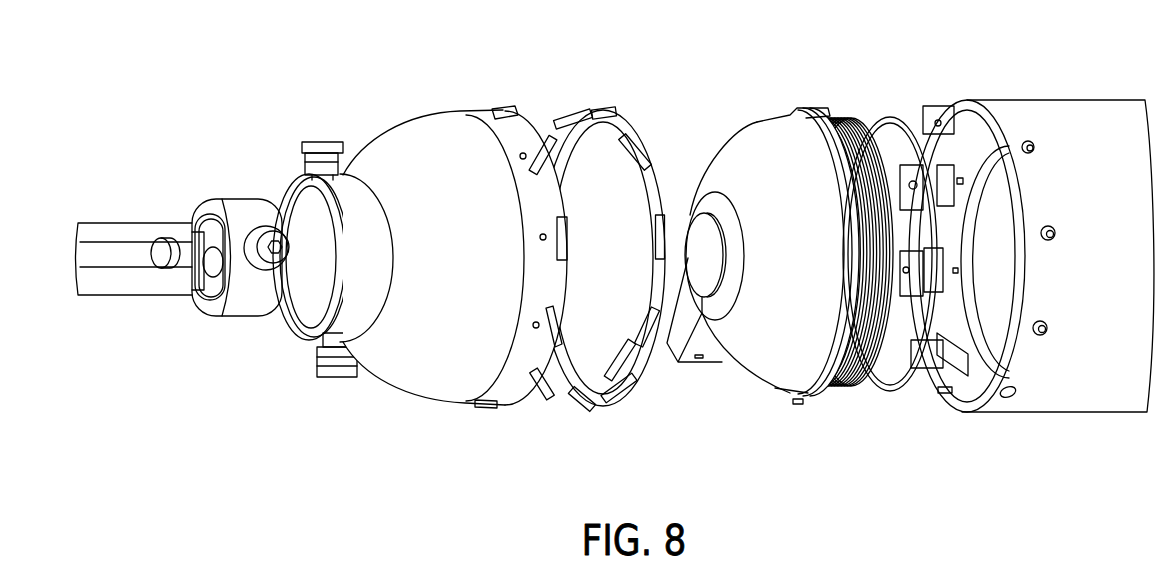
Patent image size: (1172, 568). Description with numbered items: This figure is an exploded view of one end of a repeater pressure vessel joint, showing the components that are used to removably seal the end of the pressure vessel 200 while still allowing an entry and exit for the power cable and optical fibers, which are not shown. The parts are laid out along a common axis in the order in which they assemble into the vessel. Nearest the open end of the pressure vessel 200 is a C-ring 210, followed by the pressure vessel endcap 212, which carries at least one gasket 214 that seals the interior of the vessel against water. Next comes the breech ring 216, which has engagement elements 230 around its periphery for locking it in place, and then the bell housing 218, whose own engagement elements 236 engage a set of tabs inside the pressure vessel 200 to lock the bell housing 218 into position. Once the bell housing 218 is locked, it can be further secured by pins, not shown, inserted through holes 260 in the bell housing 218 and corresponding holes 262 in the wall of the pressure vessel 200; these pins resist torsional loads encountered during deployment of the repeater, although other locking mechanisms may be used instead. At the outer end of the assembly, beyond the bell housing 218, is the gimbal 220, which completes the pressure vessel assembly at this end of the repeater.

The pressure vessel 200 is at (1072, 395).
The C-ring 210 is at (874, 118).
The pressure vessel endcap 212 is at (782, 362).
The gasket 214 is at (842, 122).
The breech ring 216 is at (634, 355).
The bell housing 218 is at (428, 392).
The gimbal 220 is at (283, 173).
The engagement elements 230 is at (600, 108).
The engagement elements 236 is at (505, 108).
The holes 260 is at (524, 152).
The holes 262 is at (1036, 147).